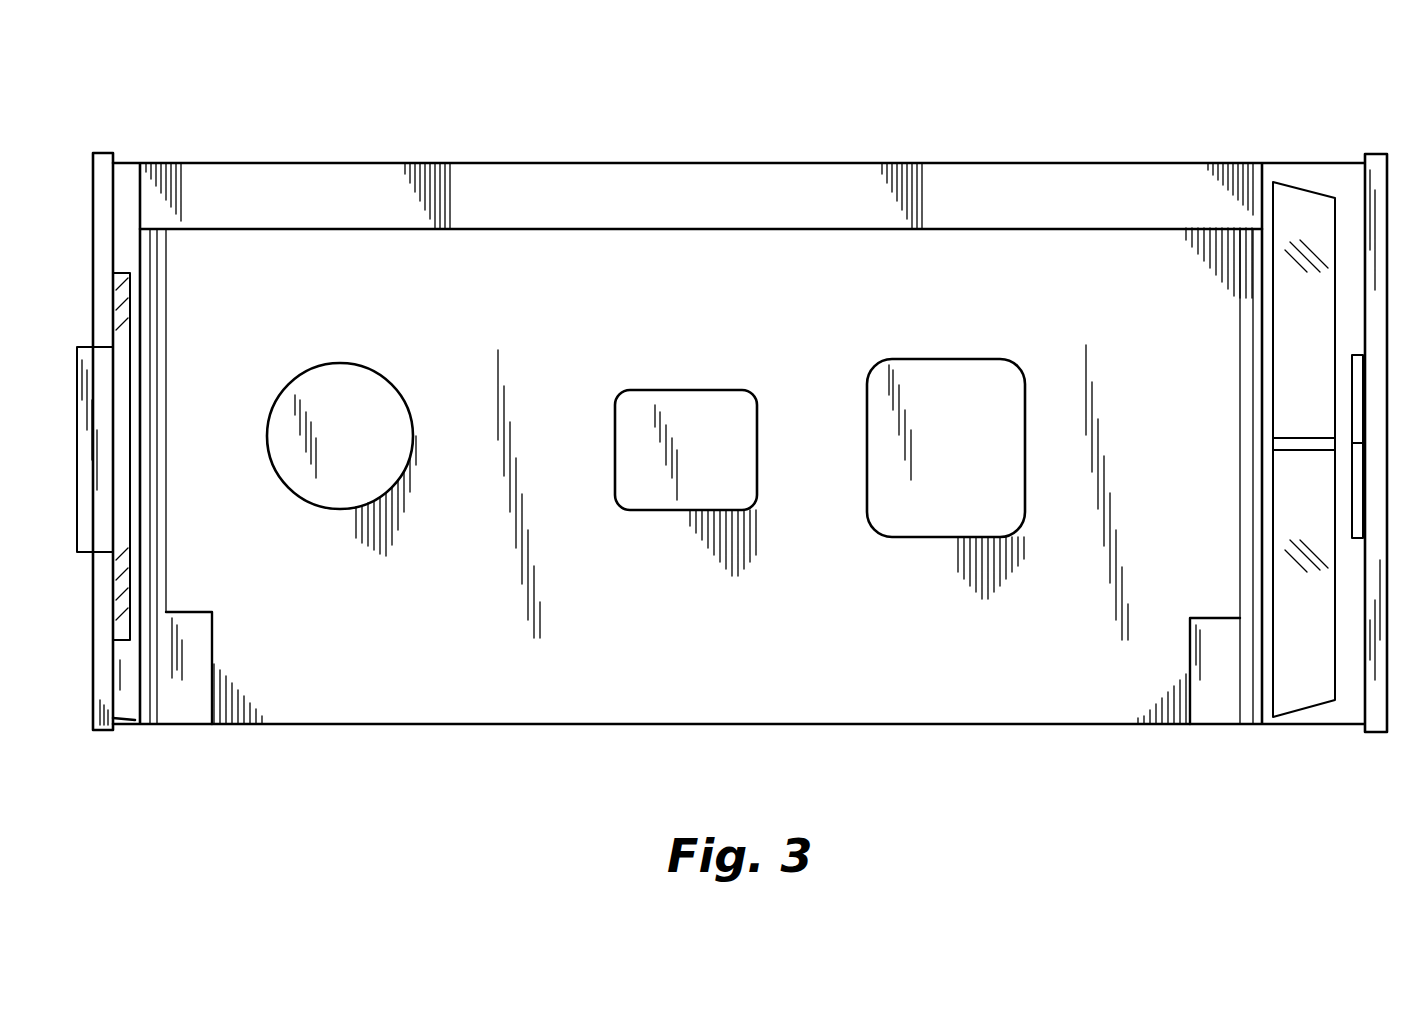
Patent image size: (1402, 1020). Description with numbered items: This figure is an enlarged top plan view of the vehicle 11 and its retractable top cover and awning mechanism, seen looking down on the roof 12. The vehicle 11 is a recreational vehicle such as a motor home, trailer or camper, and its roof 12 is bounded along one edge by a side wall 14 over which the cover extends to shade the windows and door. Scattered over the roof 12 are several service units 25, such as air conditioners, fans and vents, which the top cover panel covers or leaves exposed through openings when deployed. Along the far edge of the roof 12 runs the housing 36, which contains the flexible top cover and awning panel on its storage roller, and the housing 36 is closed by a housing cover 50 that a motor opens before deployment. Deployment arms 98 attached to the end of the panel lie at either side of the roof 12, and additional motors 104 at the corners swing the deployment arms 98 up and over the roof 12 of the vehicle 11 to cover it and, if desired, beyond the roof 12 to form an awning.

The vehicle 11 is at (396, 162).
The roof 12 is at (682, 651).
The side wall 14 is at (816, 725).
The service units 25 is at (372, 412).
The housing 36 is at (973, 205).
The housing cover 50 is at (853, 210).
The deployment arms 98 is at (166, 510).
The motors 104 is at (200, 712).